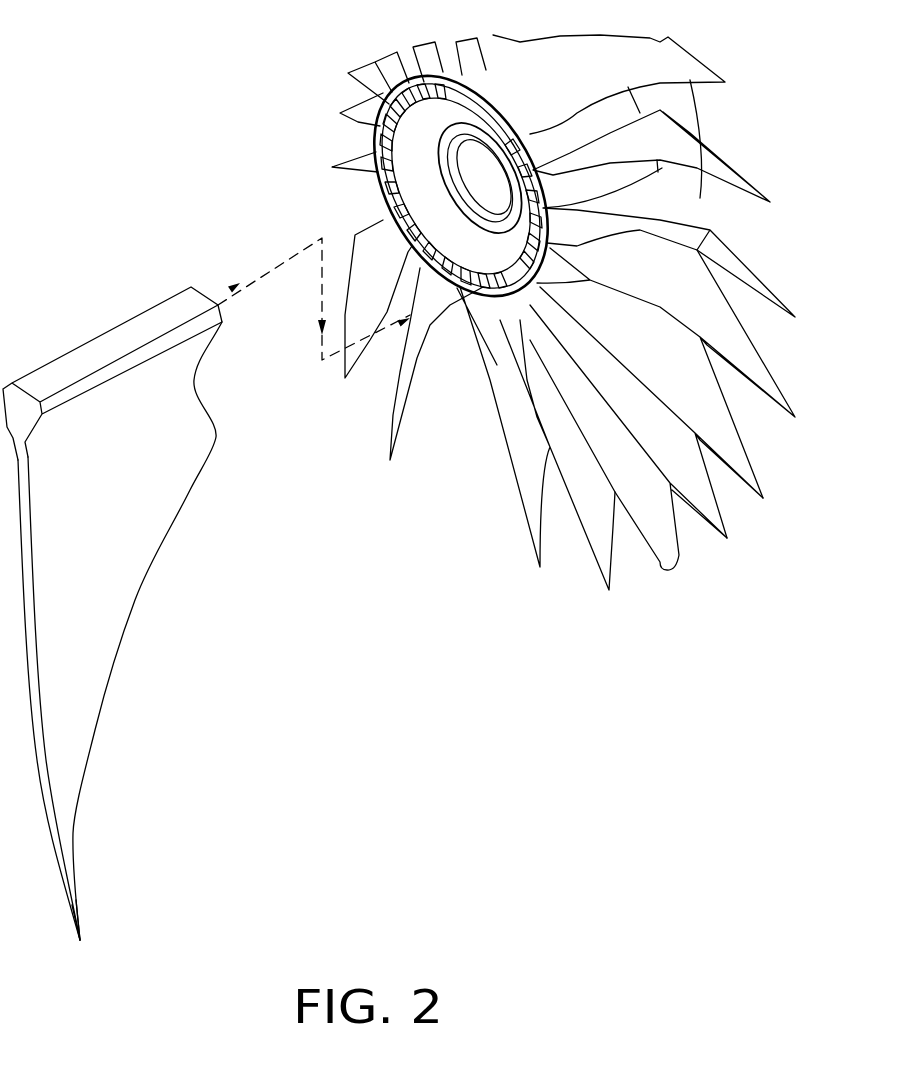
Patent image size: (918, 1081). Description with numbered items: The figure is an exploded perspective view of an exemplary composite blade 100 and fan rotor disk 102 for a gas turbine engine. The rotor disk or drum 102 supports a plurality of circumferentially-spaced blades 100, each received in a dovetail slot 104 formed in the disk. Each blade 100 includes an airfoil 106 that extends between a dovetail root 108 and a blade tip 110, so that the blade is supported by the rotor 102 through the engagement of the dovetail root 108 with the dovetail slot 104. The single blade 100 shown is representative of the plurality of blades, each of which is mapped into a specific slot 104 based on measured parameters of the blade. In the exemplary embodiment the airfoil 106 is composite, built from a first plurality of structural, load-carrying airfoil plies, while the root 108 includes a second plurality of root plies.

The composite blade 100 is at (93, 243).
The fan rotor disk 102 is at (575, 127).
The dovetail slot 104 is at (447, 285).
The airfoil 106 is at (100, 650).
The dovetail root 108 is at (130, 332).
The blade tip 110 is at (82, 930).